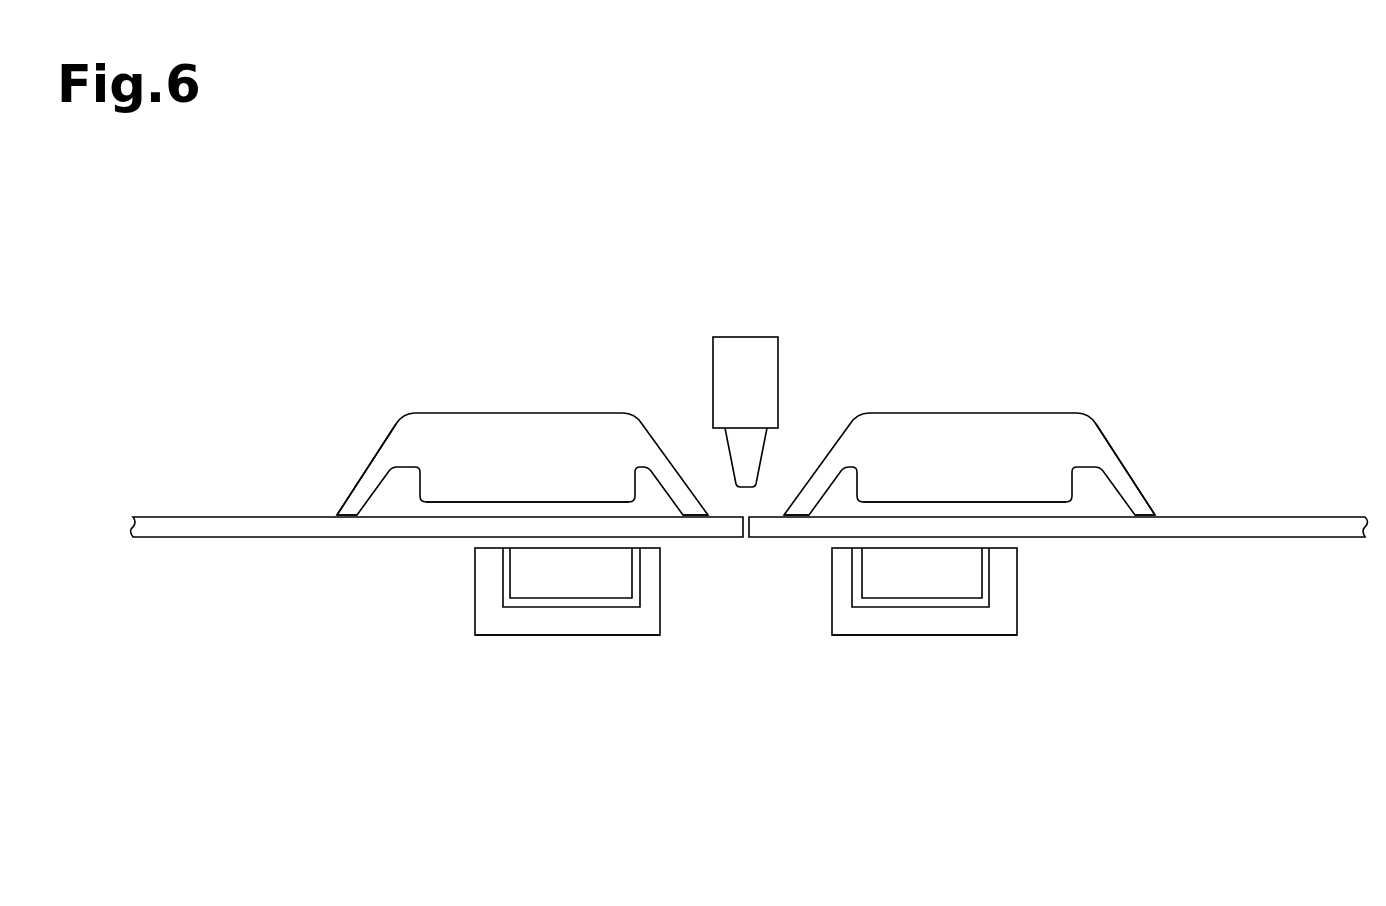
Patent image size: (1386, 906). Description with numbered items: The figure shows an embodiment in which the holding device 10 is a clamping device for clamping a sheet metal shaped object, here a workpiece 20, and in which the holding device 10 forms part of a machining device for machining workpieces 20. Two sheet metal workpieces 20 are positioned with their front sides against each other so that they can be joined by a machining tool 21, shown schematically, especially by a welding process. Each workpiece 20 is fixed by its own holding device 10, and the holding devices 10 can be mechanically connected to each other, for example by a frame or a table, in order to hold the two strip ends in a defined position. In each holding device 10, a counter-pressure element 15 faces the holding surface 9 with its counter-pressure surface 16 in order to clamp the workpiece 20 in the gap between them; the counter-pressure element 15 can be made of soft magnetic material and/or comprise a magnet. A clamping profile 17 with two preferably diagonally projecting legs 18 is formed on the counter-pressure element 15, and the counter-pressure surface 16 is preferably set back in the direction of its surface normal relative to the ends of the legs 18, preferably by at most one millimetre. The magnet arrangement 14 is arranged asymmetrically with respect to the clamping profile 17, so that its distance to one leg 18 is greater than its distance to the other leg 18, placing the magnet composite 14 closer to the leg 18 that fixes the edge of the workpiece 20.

The holding surface 9 is at (568, 548).
The holding device 10 is at (679, 633).
The magnet arrangement 14 is at (561, 590).
The counter-pressure element 15 is at (493, 397).
The counter-pressure surface 16 is at (453, 505).
The clamping profile 17 is at (368, 432).
The legs 18 is at (363, 498).
The workpiece 20 is at (198, 530).
The machining tool 21 is at (748, 337).